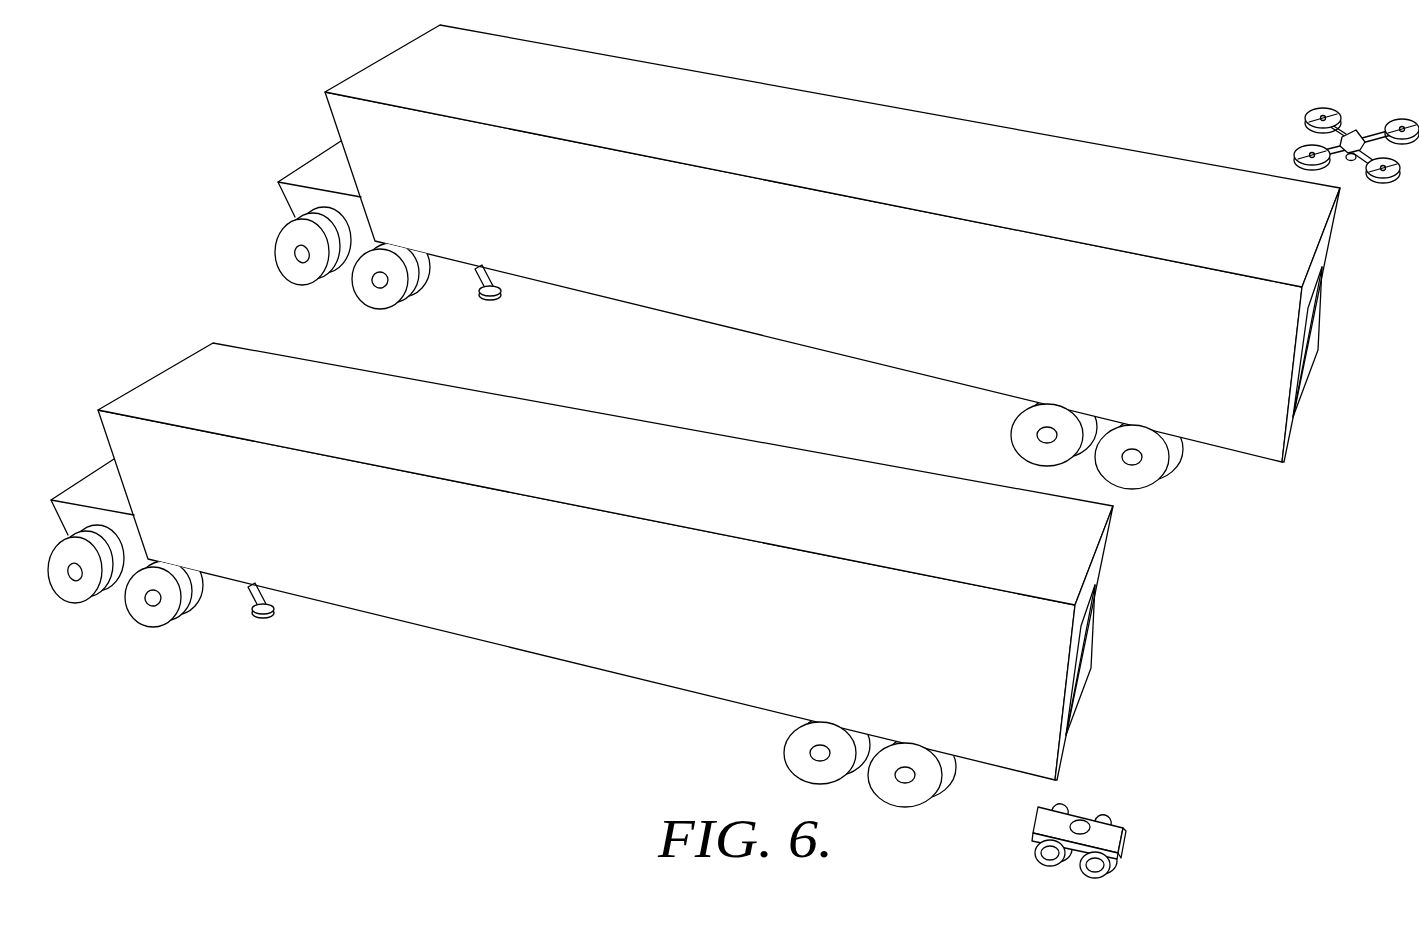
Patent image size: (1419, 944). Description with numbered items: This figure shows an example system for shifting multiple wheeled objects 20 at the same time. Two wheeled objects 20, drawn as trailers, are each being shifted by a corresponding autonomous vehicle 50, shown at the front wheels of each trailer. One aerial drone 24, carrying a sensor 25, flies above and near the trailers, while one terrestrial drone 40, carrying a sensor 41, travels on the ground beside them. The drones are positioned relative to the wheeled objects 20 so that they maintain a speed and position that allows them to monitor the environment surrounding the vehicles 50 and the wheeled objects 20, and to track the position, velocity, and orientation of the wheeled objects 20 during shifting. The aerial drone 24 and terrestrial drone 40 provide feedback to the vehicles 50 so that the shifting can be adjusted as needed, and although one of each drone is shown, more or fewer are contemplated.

The wheeled object 20 is at (652, 279).
The aerial drone 24 is at (1355, 137).
The sensor 25 is at (1351, 161).
The terrestrial drone 40 is at (1107, 832).
The sensor 41 is at (1078, 820).
The autonomous vehicle 50 is at (317, 270).